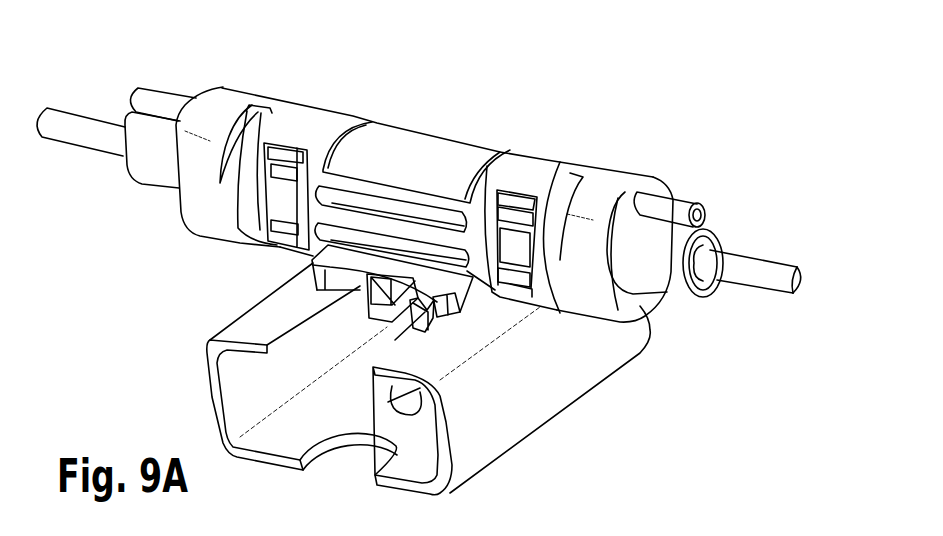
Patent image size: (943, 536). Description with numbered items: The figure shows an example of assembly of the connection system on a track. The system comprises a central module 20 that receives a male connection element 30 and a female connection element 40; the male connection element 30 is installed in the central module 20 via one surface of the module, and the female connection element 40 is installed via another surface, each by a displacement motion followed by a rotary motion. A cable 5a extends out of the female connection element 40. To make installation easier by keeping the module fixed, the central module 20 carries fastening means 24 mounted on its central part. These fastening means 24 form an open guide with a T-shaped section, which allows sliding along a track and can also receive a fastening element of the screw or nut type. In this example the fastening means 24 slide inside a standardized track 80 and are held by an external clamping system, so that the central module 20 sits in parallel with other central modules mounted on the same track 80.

The male connection element 30 is at (257, 76).
The central module 20 is at (472, 123).
The female connection element 40 is at (697, 174).
The cable 5a is at (743, 273).
The fastening means 24 is at (443, 313).
The track 80 is at (500, 405).